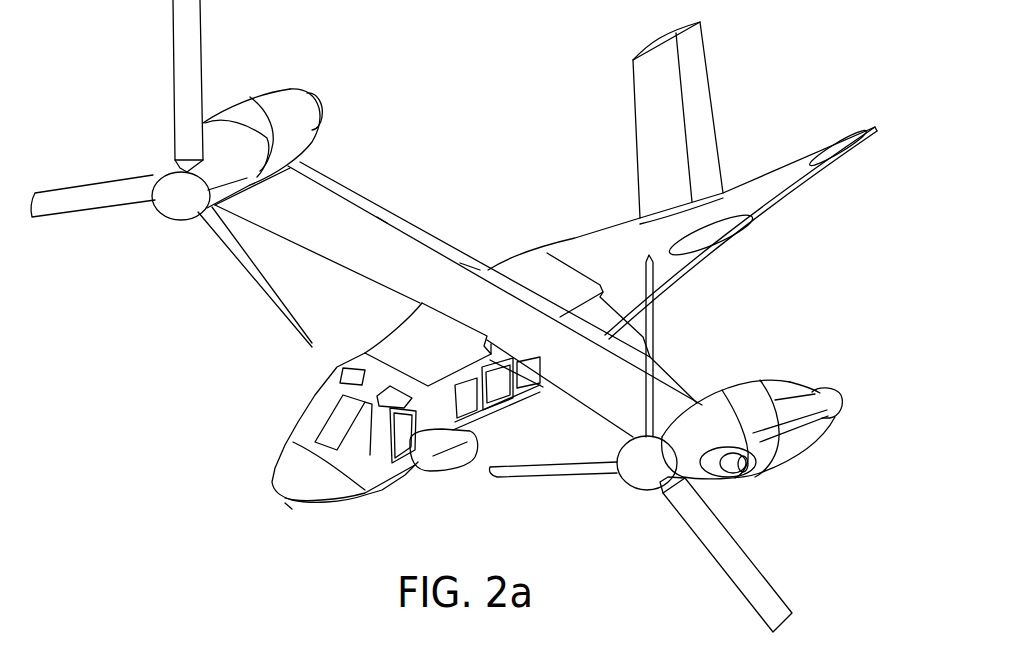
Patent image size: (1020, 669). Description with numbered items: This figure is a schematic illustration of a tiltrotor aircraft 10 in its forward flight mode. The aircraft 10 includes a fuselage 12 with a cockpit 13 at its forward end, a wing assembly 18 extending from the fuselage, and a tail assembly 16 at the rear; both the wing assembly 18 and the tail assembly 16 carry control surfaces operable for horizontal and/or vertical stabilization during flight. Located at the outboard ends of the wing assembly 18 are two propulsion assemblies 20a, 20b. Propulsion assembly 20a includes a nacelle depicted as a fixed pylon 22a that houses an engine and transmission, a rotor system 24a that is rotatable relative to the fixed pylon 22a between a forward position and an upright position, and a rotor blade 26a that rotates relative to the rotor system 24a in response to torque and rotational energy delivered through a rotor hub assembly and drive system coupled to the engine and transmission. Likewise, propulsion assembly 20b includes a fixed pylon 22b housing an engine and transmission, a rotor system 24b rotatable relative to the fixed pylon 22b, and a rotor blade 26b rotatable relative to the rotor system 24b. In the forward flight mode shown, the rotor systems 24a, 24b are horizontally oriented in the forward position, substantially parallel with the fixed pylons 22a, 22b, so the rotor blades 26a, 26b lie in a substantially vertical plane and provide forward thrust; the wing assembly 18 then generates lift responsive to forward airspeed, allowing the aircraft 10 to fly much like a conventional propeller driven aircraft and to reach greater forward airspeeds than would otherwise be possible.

The tiltrotor aircraft 10 is at (489, 158).
The fuselage 12 is at (597, 243).
The cockpit 13 is at (303, 413).
The tail assembly 16 is at (715, 104).
The wing assembly 18 is at (400, 250).
The propulsion assembly 20a is at (756, 378).
The propulsion assembly 20b is at (274, 89).
The fixed pylon 22a is at (793, 397).
The fixed pylon 22b is at (287, 103).
The rotor system 24a is at (693, 418).
The rotor system 24b is at (252, 137).
The rotor blade 26a is at (757, 565).
The rotor blade 26b is at (173, 55).